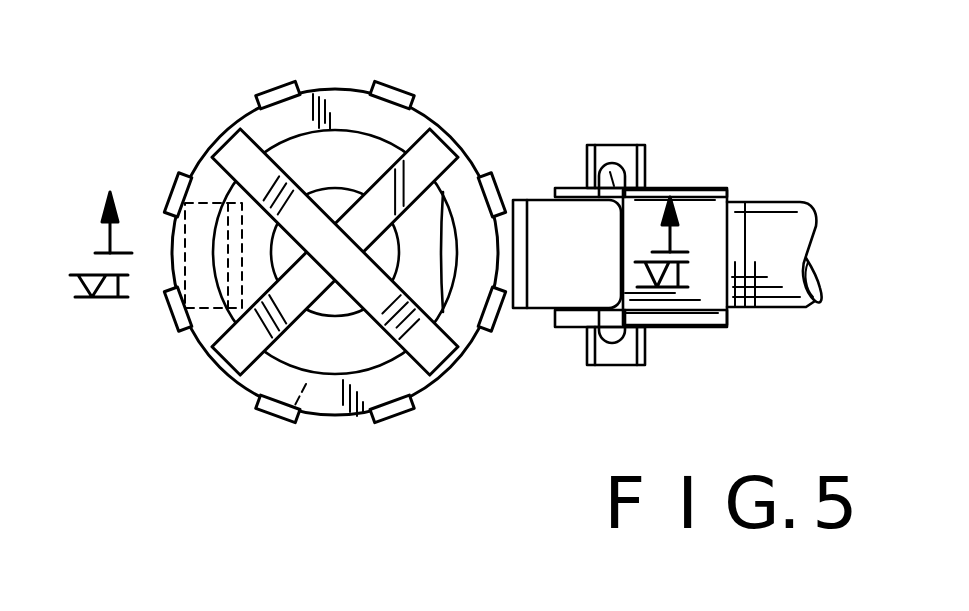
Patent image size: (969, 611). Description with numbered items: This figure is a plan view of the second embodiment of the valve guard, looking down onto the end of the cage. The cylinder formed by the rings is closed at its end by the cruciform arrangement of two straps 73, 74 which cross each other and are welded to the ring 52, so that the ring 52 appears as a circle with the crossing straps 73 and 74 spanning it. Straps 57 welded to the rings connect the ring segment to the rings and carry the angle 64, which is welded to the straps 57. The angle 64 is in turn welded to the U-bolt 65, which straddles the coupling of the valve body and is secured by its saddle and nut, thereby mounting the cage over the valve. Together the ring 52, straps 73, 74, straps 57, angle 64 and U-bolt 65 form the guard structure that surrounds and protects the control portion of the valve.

The ring 52 is at (335, 405).
The straps 57 is at (498, 325).
The angle 64 is at (546, 218).
The U-bolt 65 is at (613, 177).
The strap 73 is at (227, 150).
The strap 74 is at (447, 145).